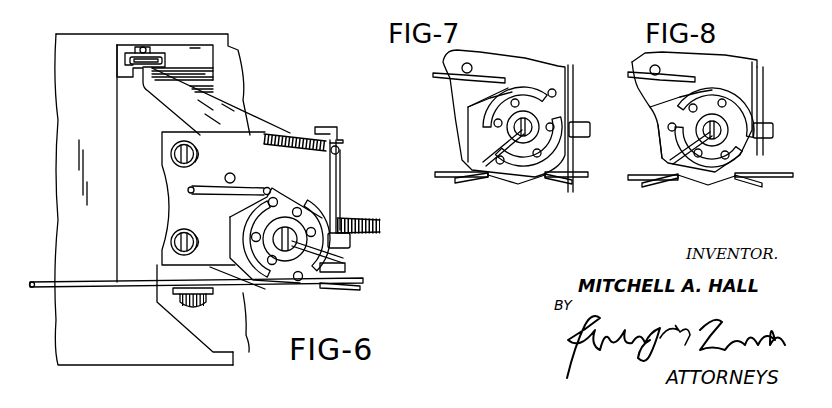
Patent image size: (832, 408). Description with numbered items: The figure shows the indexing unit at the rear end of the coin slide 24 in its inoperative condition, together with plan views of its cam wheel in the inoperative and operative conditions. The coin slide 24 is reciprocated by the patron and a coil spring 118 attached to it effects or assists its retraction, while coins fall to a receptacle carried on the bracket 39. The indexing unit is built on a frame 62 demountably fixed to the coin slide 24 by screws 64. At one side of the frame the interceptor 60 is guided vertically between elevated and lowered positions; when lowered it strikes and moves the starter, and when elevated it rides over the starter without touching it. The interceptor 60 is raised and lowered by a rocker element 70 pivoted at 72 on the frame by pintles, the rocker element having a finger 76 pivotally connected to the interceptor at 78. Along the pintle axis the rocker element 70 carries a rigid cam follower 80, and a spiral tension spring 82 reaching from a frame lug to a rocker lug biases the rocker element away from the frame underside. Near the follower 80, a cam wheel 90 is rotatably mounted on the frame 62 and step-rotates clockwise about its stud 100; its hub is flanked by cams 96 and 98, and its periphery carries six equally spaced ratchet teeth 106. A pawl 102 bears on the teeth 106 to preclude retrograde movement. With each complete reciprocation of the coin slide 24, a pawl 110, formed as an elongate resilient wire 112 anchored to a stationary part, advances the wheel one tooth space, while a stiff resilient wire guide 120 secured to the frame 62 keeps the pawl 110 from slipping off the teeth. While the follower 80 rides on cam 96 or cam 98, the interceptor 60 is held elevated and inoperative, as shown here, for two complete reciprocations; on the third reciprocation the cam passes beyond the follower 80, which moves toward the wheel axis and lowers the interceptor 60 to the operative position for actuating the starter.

In FIG. 6, the coin slide 24 is at (218, 45).
In FIG. 6, the bracket 39 is at (95, 362).
In FIG. 6, the interceptor 60 is at (130, 60).
In FIG. 6, the frame 62 is at (118, 117).
In FIG. 7, the frame 62 is at (460, 128).
In FIG. 8, the frame 62 is at (640, 92).
In FIG. 6, the screws 64 is at (171, 160).
In FIG. 6, the rocker element 70 is at (226, 122).
In FIG. 6, the pivot 72 is at (333, 127).
In FIG. 7, the pivot 72 is at (580, 180).
In FIG. 8, the pivot 72 is at (760, 178).
In FIG. 6, the finger 76 is at (143, 47).
In FIG. 6, the pivotal connection 78 is at (126, 53).
In FIG. 6, the cam follower 80 is at (350, 242).
In FIG. 7, the cam follower 80 is at (577, 124).
In FIG. 8, the cam follower 80 is at (770, 124).
In FIG. 6, the spiral tension spring 82 is at (294, 133).
In FIG. 6, the cam wheel 90 is at (281, 194).
In FIG. 7, the cam wheel 90 is at (468, 132).
In FIG. 8, the cam wheel 90 is at (668, 135).
In FIG. 6, the cam 96 is at (279, 239).
In FIG. 7, the cam 96 is at (532, 82).
In FIG. 8, the cam 96 is at (752, 95).
In FIG. 6, the cam 98 is at (326, 219).
In FIG. 7, the cam 98 is at (518, 184).
In FIG. 8, the cam 98 is at (708, 187).
In FIG. 6, the stud 100 is at (343, 262).
In FIG. 7, the stud 100 is at (483, 162).
In FIG. 8, the stud 100 is at (670, 160).
In FIG. 6, the pawl 102 is at (243, 162).
In FIG. 7, the pawl 102 is at (460, 80).
In FIG. 8, the pawl 102 is at (638, 88).
In FIG. 6, the ratchet teeth 106 is at (287, 190).
In FIG. 7, the ratchet teeth 106 is at (468, 112).
In FIG. 8, the ratchet teeth 106 is at (658, 122).
In FIG. 6, the pawl 110 is at (36, 282).
In FIG. 6, the elongate resilient wire 112 is at (358, 290).
In FIG. 7, the elongate resilient wire 112 is at (440, 178).
In FIG. 8, the elongate resilient wire 112 is at (632, 182).
In FIG. 6, the coil spring 118 is at (372, 220).
In FIG. 6, the guide 120 is at (325, 288).
In FIG. 7, the guide 120 is at (468, 184).
In FIG. 8, the guide 120 is at (658, 189).